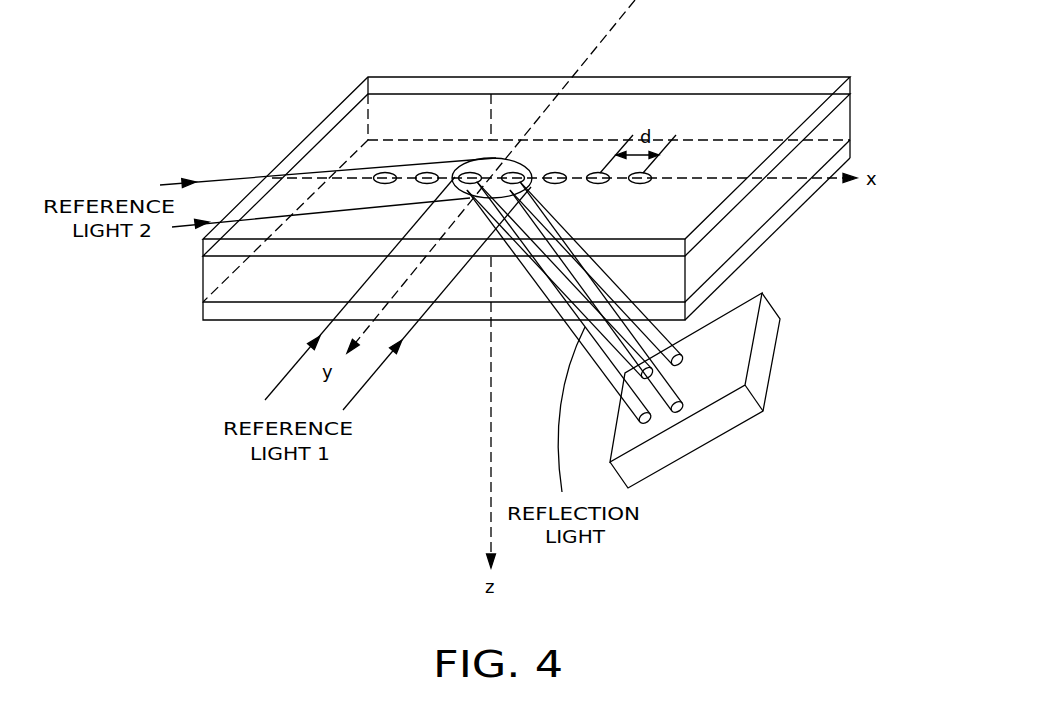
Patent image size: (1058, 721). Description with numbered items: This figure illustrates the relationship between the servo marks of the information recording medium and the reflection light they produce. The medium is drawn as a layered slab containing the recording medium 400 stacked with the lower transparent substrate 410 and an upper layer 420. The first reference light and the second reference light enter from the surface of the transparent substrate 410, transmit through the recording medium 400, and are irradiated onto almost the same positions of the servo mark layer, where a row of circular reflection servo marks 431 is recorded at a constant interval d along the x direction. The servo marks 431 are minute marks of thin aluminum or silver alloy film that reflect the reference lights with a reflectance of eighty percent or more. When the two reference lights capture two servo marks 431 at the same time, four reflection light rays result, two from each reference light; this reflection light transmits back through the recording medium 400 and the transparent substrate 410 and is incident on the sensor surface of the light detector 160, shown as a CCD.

The light detector 160 is at (740, 427).
The recording medium 400 is at (838, 128).
The transparent substrate 410 is at (238, 312).
The cover layer 420 is at (778, 83).
The servo marks 431 is at (427, 173).